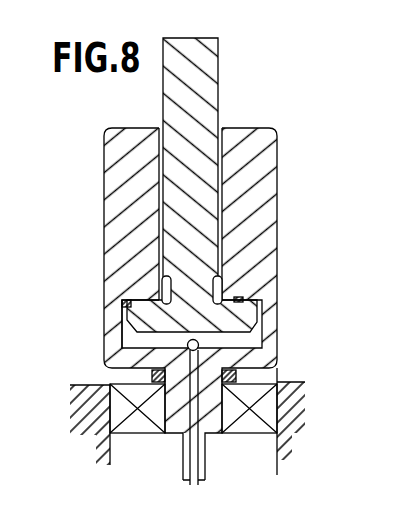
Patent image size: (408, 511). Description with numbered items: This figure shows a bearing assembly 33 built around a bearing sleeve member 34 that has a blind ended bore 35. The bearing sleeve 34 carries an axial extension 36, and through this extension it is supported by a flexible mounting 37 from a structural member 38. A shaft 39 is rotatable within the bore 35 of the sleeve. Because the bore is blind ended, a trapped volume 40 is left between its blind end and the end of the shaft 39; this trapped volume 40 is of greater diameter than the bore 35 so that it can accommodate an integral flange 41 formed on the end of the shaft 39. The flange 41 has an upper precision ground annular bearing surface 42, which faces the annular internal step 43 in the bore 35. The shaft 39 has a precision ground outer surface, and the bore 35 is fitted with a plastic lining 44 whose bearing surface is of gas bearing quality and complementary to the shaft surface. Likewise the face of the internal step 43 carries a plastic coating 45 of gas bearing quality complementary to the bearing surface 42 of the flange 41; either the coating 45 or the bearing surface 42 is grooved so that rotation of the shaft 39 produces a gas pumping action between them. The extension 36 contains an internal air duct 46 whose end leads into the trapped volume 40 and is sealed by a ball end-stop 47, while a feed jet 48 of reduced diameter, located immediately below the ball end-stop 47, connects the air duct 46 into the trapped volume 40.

The bearing assembly 33 is at (278, 170).
The bearing sleeve member 34 is at (104, 167).
The blind ended bore 35 is at (225, 281).
The axial extension 36 is at (280, 410).
The flexible mounting 37 is at (142, 436).
The structural member 38 is at (100, 417).
The shaft 39 is at (216, 92).
The trapped volume 40 is at (254, 330).
The integral flange 41 is at (248, 298).
The annular bearing surface 42 is at (124, 318).
The annular internal step 43 is at (160, 292).
The plastic lining 44 is at (159, 207).
The plastic coating 45 is at (122, 301).
The internal air duct 46 is at (232, 450).
The ball end-stop 47 is at (187, 344).
The feed jet 48 is at (249, 340).